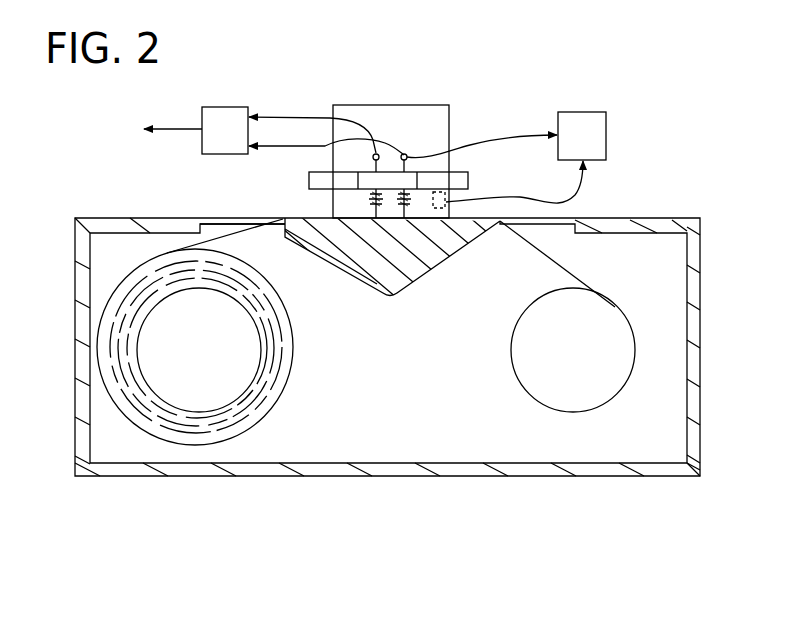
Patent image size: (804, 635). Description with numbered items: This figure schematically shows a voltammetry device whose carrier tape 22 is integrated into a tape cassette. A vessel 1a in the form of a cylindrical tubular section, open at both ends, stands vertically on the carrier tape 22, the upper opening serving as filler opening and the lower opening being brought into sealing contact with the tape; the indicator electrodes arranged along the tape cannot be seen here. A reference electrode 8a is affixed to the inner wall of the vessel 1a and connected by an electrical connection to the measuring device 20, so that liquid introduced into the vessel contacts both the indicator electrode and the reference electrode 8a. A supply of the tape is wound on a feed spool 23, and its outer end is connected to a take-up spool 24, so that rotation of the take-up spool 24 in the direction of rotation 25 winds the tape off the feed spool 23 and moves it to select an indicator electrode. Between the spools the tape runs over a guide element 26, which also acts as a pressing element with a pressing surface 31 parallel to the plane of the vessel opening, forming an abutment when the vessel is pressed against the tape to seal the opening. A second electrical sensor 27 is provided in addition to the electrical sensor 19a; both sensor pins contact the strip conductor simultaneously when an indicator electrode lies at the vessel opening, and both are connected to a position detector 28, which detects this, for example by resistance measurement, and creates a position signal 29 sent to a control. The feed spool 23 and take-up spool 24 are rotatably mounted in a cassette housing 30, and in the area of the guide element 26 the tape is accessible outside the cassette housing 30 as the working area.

The vessel 1a is at (438, 135).
The reference electrode 8a is at (446, 199).
The electrical sensor 19a is at (408, 153).
The measuring device 20 is at (506, 157).
The carrier tape 22 is at (240, 218).
The feed spool 23 is at (173, 332).
The take-up spool 24 is at (620, 342).
The direction of rotation 25 is at (577, 326).
The guide element 26 is at (374, 268).
The second electrical sensor 27 is at (377, 153).
The position detector 28 is at (303, 131).
The position signal 29 is at (173, 111).
The cassette housing 30 is at (637, 228).
The pressing surface 31 is at (407, 225).